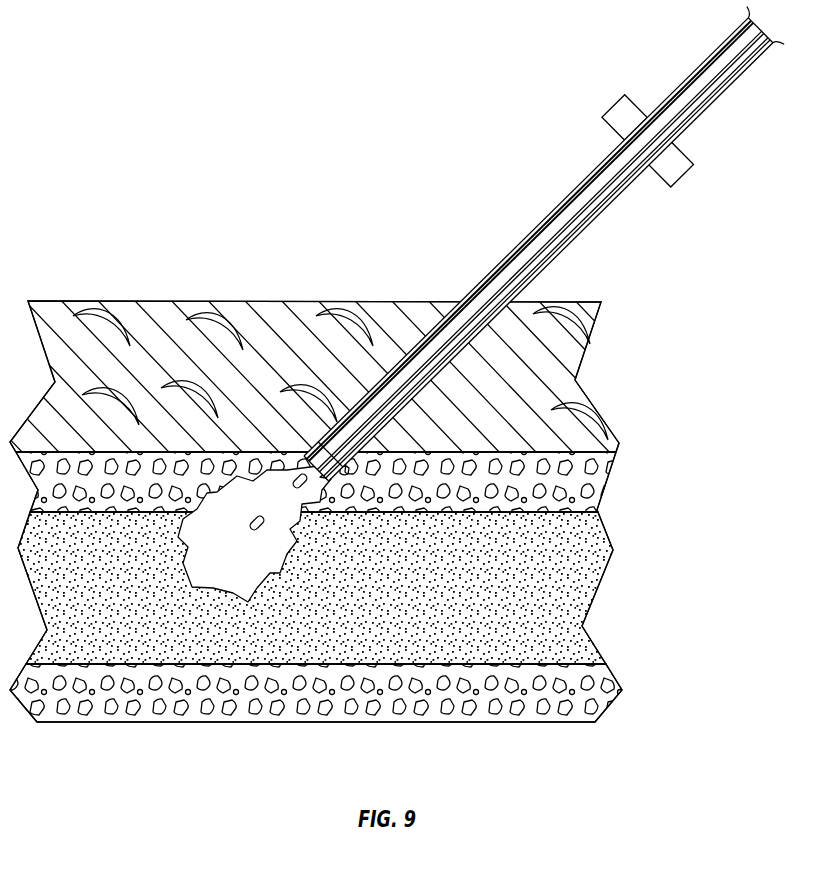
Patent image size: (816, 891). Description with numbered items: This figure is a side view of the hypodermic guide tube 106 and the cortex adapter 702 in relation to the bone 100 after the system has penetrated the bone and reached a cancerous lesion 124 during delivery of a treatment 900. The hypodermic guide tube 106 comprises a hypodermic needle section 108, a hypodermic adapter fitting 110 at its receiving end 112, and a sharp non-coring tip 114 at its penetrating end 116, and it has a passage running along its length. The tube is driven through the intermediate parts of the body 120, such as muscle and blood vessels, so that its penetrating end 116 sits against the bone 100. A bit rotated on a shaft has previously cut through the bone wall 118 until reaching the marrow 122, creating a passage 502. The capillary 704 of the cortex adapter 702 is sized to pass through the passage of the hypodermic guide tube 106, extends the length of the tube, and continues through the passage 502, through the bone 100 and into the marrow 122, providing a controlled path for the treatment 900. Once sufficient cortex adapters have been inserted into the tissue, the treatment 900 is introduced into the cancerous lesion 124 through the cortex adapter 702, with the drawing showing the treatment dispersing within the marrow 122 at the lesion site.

The bone 100 is at (568, 473).
The hypodermic guide tube 106 is at (527, 236).
The hypodermic needle section 108 is at (571, 240).
The hypodermic adapter fitting 110 is at (689, 161).
The receiving end 112 is at (682, 140).
The sharp non-coring tip 114 is at (310, 453).
The penetrating end 116 is at (318, 440).
The bone wall 118 is at (359, 516).
The intermediate parts of the body 120 is at (553, 407).
The marrow 122 is at (537, 592).
The cancerous lesion 124 is at (253, 575).
The passage 502 is at (338, 473).
The cortex adapter 702 is at (700, 66).
The capillary 704 is at (741, 73).
The treatment 900 is at (252, 523).